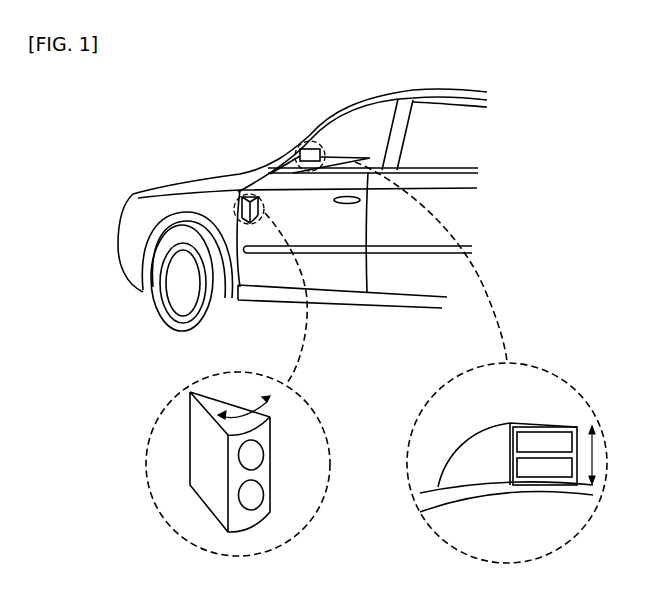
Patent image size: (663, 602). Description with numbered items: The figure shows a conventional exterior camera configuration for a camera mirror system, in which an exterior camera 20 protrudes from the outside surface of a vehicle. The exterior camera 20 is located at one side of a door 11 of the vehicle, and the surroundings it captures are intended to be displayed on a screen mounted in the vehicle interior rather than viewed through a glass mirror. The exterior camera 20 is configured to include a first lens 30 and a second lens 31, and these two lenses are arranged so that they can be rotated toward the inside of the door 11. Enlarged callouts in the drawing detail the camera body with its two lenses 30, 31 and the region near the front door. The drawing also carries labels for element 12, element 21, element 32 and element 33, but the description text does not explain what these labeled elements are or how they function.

The door 11 is at (270, 268).
The door window 12 is at (348, 163).
The exterior camera 20 is at (239, 188).
The side mirror 21 is at (308, 143).
The first lens 30 is at (252, 455).
The second lens 31 is at (258, 495).
The first display 32 is at (553, 440).
The second display 33 is at (553, 470).